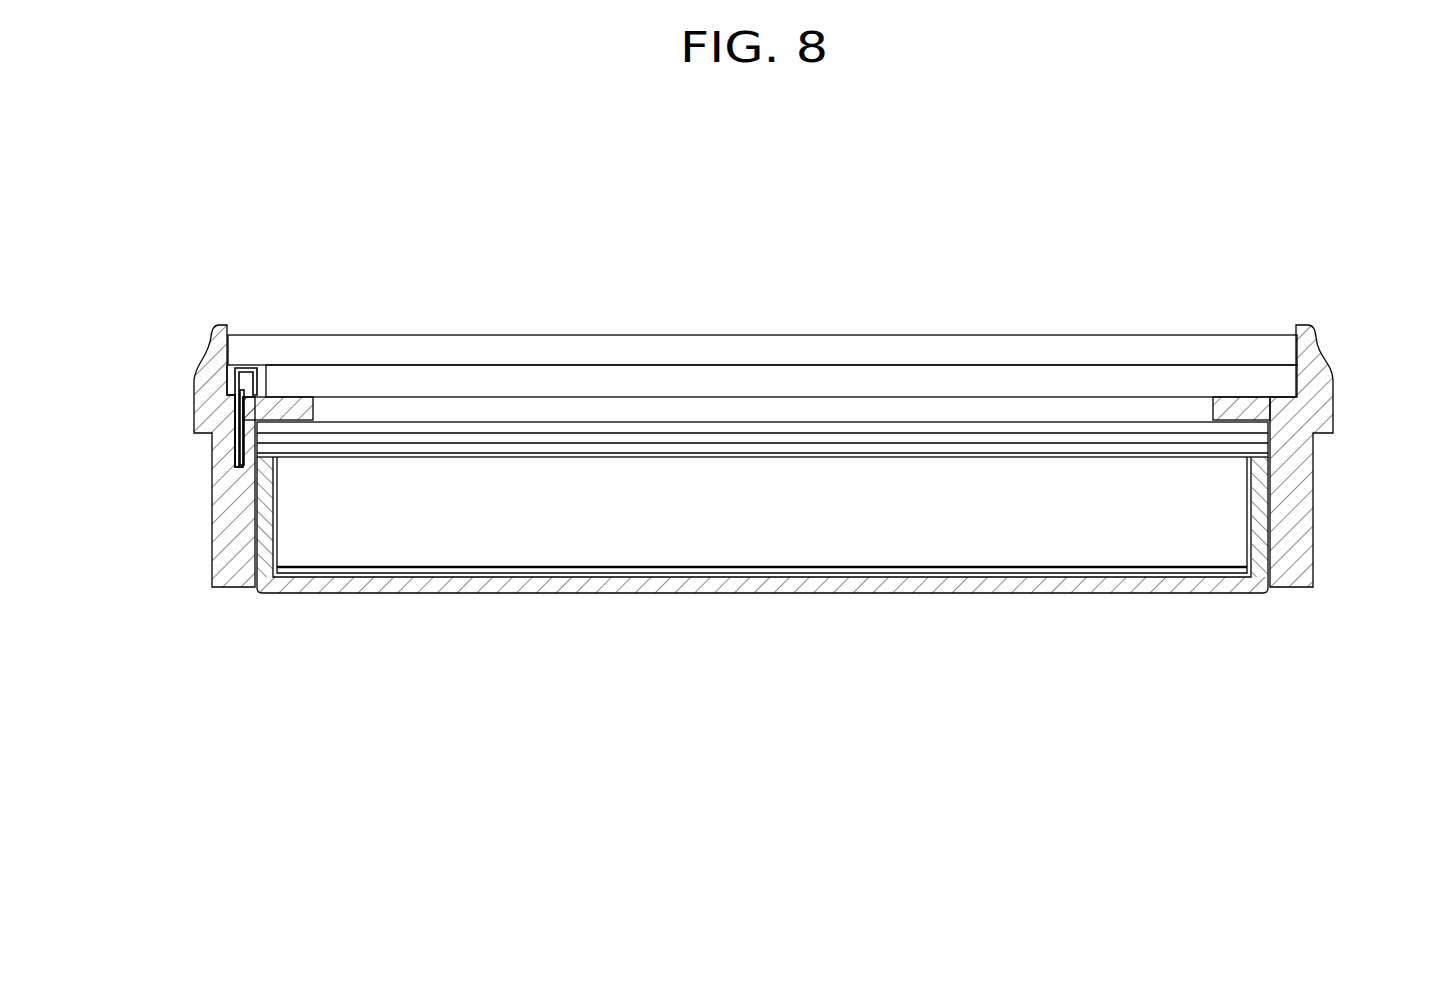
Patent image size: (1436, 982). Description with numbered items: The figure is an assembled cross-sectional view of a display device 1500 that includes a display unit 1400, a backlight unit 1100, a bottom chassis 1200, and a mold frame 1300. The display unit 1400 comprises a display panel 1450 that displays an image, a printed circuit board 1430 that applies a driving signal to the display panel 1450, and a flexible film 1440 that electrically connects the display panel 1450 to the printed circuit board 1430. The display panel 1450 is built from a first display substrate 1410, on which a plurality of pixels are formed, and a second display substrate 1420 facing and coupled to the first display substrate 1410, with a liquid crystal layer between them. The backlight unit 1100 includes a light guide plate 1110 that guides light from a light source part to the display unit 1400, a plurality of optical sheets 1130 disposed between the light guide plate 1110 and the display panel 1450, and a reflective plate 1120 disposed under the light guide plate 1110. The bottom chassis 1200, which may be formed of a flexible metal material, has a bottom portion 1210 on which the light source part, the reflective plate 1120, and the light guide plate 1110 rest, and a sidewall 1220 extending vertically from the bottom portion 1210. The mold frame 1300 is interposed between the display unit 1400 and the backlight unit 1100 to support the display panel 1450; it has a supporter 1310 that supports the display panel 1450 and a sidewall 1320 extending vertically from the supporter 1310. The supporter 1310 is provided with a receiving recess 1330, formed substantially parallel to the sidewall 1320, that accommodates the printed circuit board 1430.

The backlight unit 1100 is at (853, 665).
The light guide plate 1110 is at (656, 545).
The reflective plate 1120 is at (748, 572).
The optical sheets 1130 is at (830, 450).
The bottom chassis 1200 is at (410, 665).
The bottom portion 1210 is at (387, 587).
The sidewall 1220 is at (277, 553).
The mold frame 1300 is at (222, 497).
The supporter 1310 is at (295, 405).
The sidewall 1320 is at (1316, 370).
The receiving recess 1330 is at (259, 396).
The display unit 1400 is at (1290, 298).
The first display substrate 1410 is at (1085, 345).
The second display substrate 1420 is at (1150, 376).
The printed circuit board 1430 is at (240, 422).
The flexible film 1440 is at (237, 386).
The display panel 1450 is at (1185, 267).
The display device 1500 is at (1233, 228).